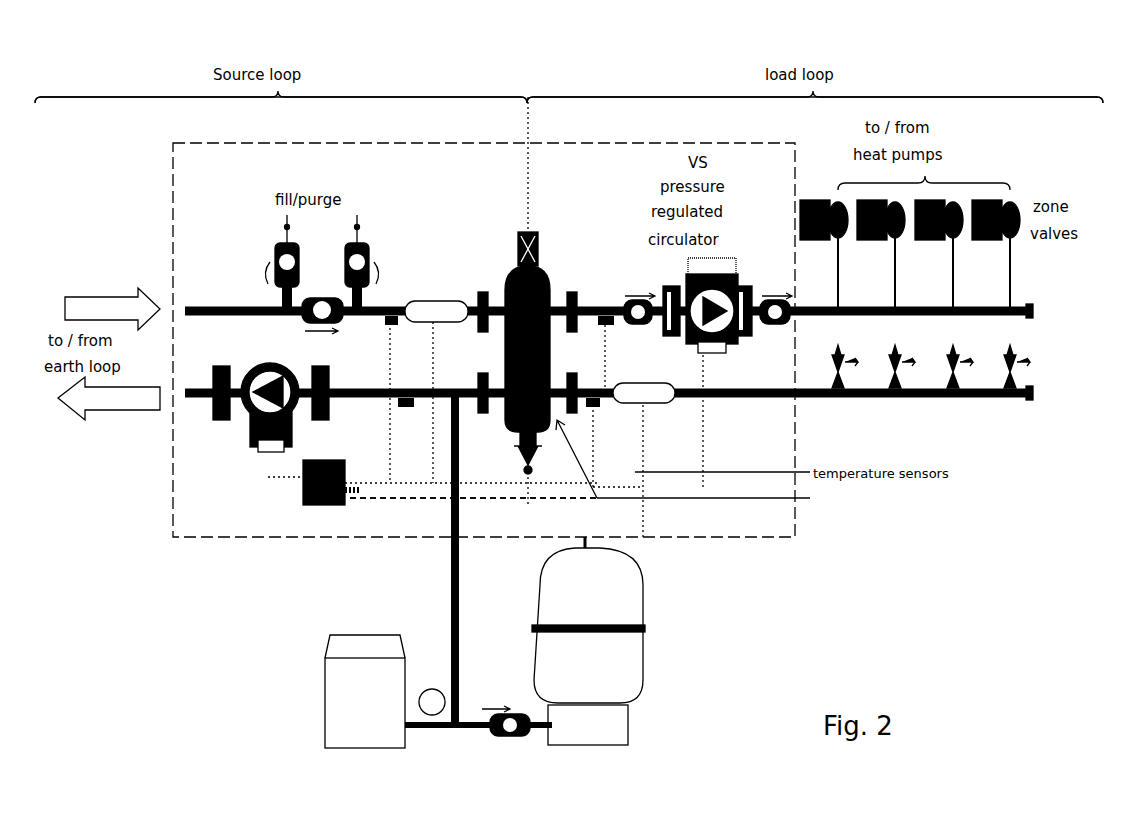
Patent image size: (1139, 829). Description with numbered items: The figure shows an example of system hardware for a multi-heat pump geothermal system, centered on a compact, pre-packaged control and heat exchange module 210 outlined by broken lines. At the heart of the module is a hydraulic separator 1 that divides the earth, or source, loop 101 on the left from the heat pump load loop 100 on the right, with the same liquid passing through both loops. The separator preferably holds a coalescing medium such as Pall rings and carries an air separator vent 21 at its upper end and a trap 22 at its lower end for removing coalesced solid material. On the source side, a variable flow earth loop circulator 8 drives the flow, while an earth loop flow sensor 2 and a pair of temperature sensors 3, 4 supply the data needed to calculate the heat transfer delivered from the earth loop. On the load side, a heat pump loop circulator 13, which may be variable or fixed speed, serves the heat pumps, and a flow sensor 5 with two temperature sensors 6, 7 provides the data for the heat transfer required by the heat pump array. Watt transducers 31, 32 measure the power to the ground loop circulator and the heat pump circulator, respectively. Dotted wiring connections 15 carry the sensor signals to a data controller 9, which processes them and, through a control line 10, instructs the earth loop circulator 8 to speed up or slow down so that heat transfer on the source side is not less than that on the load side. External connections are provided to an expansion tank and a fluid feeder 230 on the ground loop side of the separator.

The load loop 100 is at (812, 49).
The source loop 101 is at (250, 51).
The hydraulic separator 1 is at (562, 283).
The flow rate sensor 2 is at (438, 288).
The temperature sensor 3 is at (381, 329).
The temperature sensor 4 is at (412, 410).
The flow rate sensor 5 is at (810, 443).
The temperature sensor 6 is at (618, 326).
The temperature sensor 7 is at (393, 325).
The earth loop circulator 8 is at (239, 425).
The data controller 9 is at (294, 505).
The control line 10 is at (262, 480).
The heat pump loop circulator 13 is at (728, 291).
The wiring connections 15 is at (382, 501).
The air separator vent 21 is at (526, 214).
The trap 22 is at (516, 470).
The watt transducer 31 is at (300, 439).
The watt transducer 32 is at (715, 340).
The compact control and heat exchange module 210 is at (317, 554).
The fluid feeder 230 is at (314, 701).